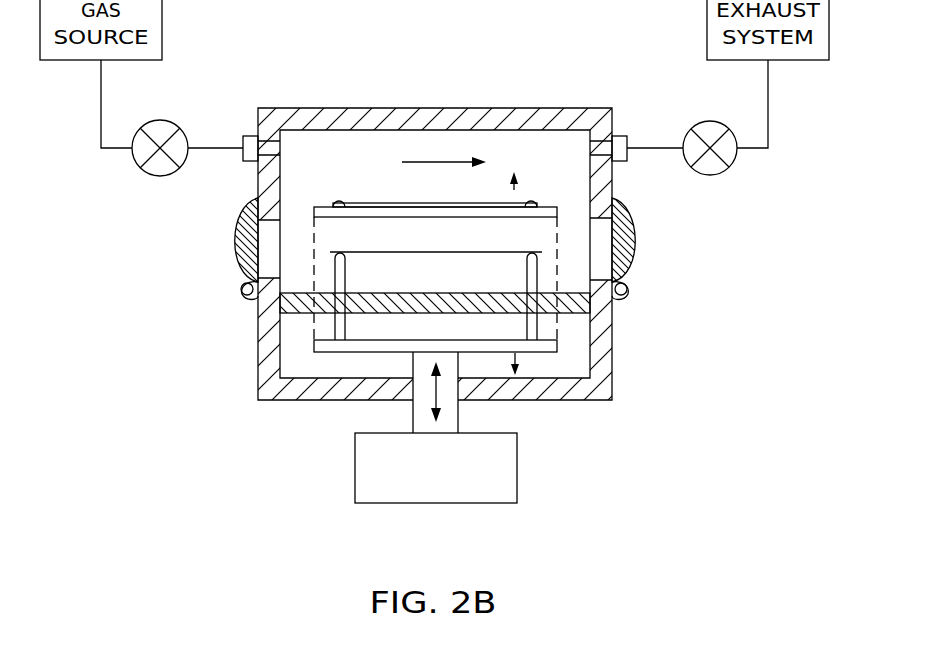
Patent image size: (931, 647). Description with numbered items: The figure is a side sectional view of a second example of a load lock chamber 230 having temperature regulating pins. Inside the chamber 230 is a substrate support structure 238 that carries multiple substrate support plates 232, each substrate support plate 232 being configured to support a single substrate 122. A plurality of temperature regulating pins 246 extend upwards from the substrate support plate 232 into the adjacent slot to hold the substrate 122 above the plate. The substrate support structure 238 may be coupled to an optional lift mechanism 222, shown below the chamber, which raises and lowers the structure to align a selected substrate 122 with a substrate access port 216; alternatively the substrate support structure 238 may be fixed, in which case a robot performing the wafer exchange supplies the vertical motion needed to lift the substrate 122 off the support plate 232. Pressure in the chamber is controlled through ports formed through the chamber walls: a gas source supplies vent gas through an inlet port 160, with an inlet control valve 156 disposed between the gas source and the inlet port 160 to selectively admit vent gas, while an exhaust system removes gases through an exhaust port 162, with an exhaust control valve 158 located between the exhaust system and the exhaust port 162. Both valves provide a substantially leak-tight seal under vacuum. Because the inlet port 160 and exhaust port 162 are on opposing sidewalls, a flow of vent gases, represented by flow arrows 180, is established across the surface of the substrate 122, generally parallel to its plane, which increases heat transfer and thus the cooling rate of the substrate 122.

The load lock chamber 230 is at (406, 90).
The inlet control valve 156 is at (152, 120).
The exhaust control valve 158 is at (718, 121).
The inlet port 160 is at (268, 152).
The exhaust port 162 is at (617, 118).
The flow arrows 180 is at (419, 160).
The substrate 122 is at (423, 252).
The temperature regulating pins 246 is at (333, 205).
The substrate support plate 232 is at (557, 207).
The substrate access port 216 is at (634, 251).
The substrate support structure 238 is at (552, 281).
The lift mechanism 222 is at (520, 463).